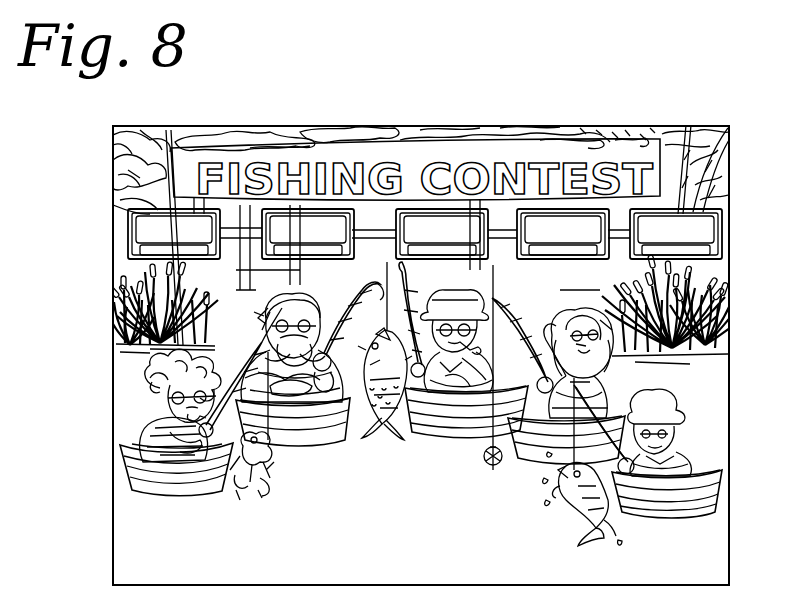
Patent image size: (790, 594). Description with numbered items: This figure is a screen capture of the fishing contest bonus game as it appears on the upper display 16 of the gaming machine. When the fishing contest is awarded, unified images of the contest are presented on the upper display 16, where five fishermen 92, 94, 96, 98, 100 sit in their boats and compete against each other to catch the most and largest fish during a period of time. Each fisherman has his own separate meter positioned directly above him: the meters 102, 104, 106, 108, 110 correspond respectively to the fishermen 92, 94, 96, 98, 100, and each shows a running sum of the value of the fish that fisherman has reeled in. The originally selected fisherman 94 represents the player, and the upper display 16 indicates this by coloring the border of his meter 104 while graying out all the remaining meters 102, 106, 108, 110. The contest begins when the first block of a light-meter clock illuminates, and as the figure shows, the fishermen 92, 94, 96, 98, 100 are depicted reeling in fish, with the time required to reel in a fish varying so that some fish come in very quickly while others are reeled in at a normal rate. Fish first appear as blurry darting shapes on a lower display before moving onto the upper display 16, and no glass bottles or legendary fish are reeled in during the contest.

The upper video display 16 is at (120, 410).
The fisherman 92 is at (190, 474).
The fisherman 94 is at (322, 432).
The fisherman 96 is at (440, 436).
The fisherman 98 is at (535, 455).
The fisherman 100 is at (658, 512).
The meter 102 is at (150, 229).
The meter 104 is at (298, 228).
The meter 106 is at (421, 228).
The meter 108 is at (544, 228).
The meter 110 is at (660, 228).